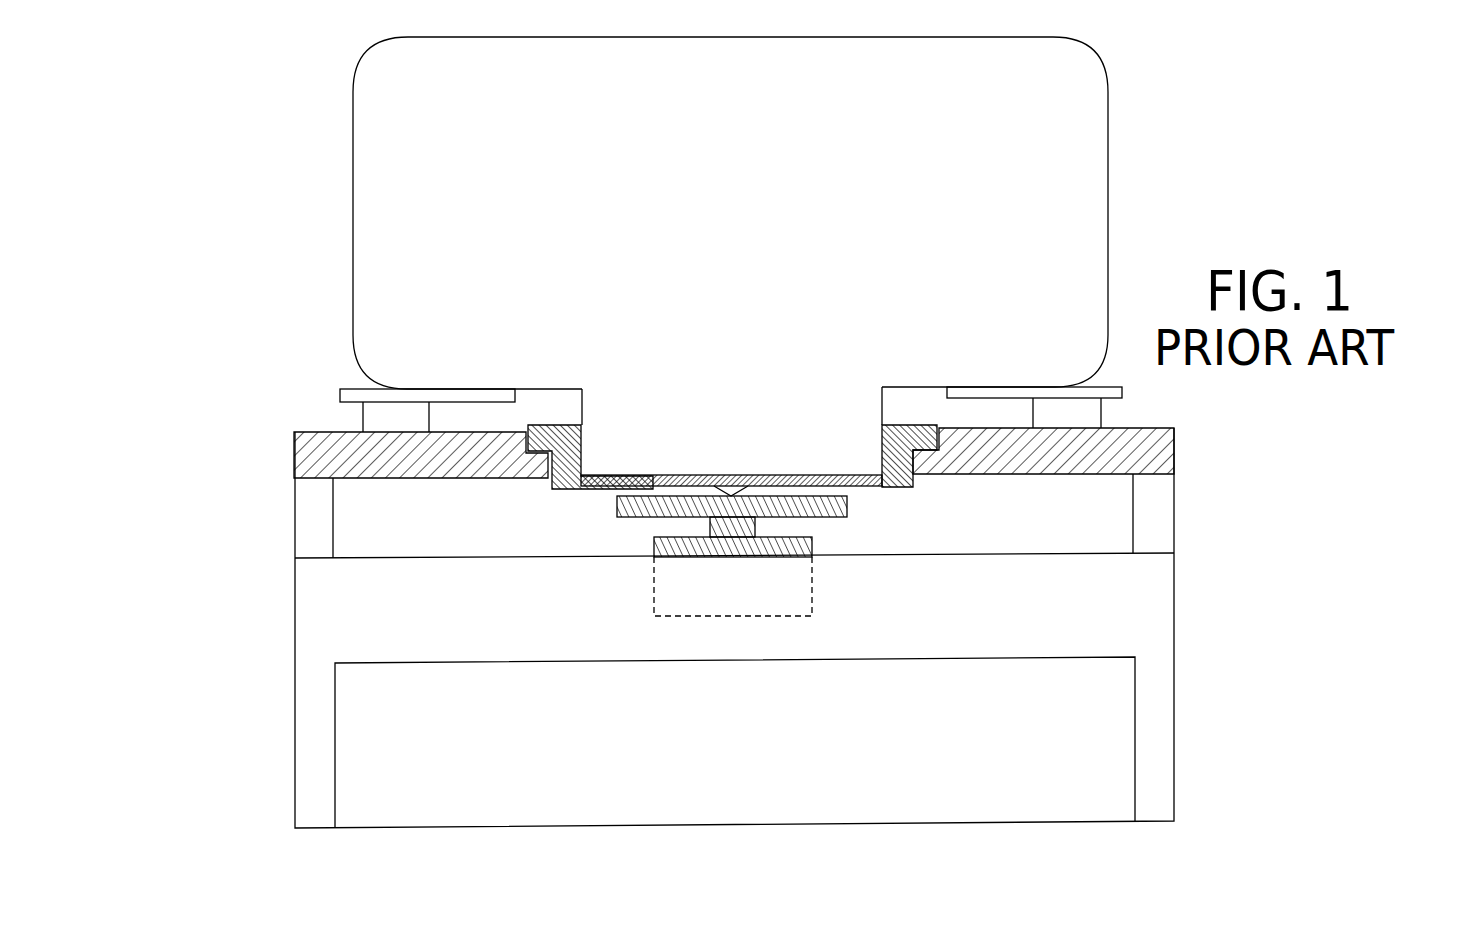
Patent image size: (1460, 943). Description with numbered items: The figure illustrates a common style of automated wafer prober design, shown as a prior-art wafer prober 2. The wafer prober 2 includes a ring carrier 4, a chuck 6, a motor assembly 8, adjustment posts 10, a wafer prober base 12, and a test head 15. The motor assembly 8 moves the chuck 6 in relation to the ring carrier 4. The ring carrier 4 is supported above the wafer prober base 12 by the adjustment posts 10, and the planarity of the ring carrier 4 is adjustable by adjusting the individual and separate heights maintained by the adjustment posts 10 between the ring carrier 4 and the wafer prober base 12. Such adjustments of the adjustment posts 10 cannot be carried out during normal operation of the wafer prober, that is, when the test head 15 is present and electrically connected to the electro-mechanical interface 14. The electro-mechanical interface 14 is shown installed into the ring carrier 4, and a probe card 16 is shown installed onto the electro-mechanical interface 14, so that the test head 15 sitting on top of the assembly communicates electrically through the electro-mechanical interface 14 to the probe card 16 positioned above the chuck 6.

The wafer prober 2 is at (853, 690).
The ring carrier 4 is at (844, 482).
The chuck 6 is at (1012, 631).
The motor assembly 8 is at (1033, 687).
The adjustment posts 10 is at (760, 518).
The wafer prober base 12 is at (881, 774).
The electro-mechanical interface 14 is at (533, 298).
The test head 15 is at (797, 234).
The probe card 16 is at (914, 268).